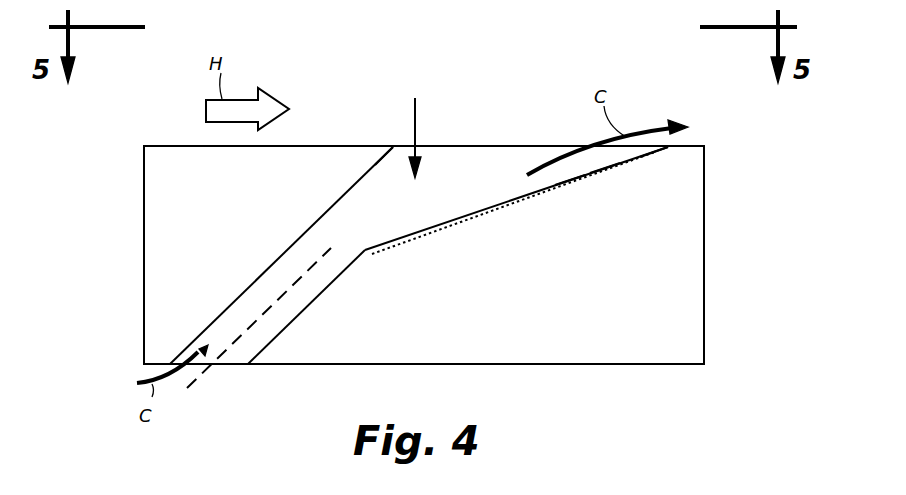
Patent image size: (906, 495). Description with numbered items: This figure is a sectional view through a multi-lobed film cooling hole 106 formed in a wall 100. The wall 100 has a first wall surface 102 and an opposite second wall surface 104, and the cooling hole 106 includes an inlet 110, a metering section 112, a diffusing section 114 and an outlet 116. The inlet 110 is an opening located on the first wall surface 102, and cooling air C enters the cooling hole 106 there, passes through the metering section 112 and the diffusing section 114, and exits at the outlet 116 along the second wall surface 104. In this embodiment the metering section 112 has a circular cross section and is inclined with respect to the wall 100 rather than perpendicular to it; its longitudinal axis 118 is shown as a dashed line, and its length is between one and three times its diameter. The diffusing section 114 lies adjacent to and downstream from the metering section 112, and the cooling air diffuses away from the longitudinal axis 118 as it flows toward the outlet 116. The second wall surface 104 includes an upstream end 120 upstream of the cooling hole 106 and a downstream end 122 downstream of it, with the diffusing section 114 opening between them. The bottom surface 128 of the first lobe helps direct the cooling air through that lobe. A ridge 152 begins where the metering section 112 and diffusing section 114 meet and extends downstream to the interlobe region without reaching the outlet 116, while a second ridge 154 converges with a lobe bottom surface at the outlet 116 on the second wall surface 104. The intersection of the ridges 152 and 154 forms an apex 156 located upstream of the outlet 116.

The wall 100 is at (768, 207).
The first wall surface 102 is at (678, 365).
The second wall surface 104 is at (175, 146).
The multi-lobed film cooling hole 106 is at (325, 208).
The inlet 110 is at (230, 366).
The metering section 112 is at (305, 319).
The diffusing section 114 is at (415, 127).
The outlet 116 is at (495, 146).
The longitudinal axis 118 is at (177, 390).
The upstream end 120 is at (383, 146).
The downstream end 122 is at (675, 148).
The bottom surface 128 is at (510, 204).
The ridge 152 is at (486, 205).
The ridge 154 is at (597, 169).
The apex 156 is at (568, 172).